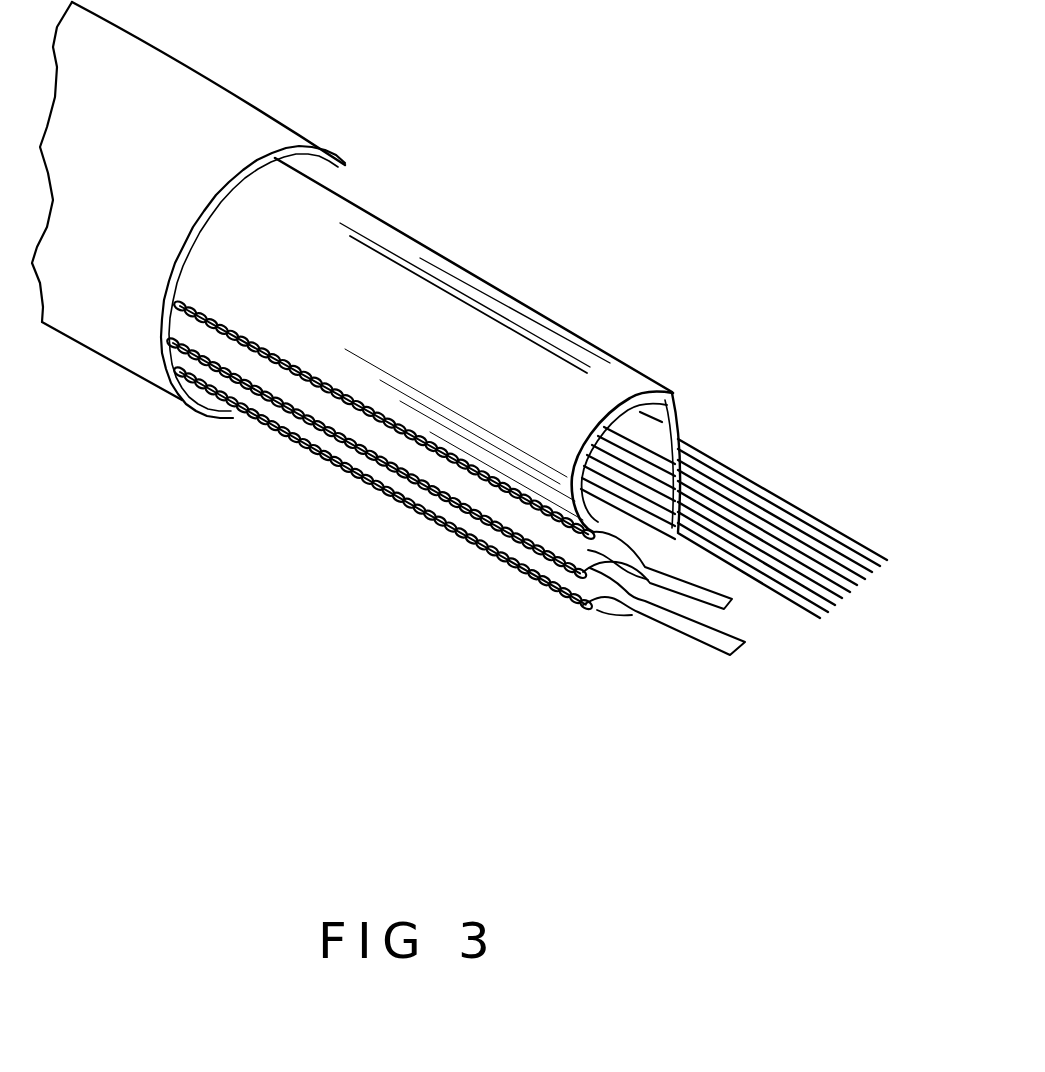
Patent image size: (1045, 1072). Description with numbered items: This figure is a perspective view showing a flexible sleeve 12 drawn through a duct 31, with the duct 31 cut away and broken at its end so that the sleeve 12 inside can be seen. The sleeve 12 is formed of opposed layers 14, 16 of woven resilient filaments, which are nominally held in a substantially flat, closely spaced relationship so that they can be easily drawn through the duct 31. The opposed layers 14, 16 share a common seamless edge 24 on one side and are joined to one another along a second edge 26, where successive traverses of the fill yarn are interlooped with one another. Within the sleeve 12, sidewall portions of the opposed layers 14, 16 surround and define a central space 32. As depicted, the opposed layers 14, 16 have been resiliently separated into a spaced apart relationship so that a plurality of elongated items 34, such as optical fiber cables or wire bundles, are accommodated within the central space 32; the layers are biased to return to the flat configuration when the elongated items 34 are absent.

The flexible sleeve 12 is at (457, 297).
The opposed layer 14 is at (683, 443).
The opposed layer 16 is at (355, 260).
The common seamless edge 24 is at (590, 343).
The second edge 26 is at (387, 420).
The duct 31 is at (172, 100).
The central space 32 is at (673, 410).
The elongated items 34 is at (790, 517).